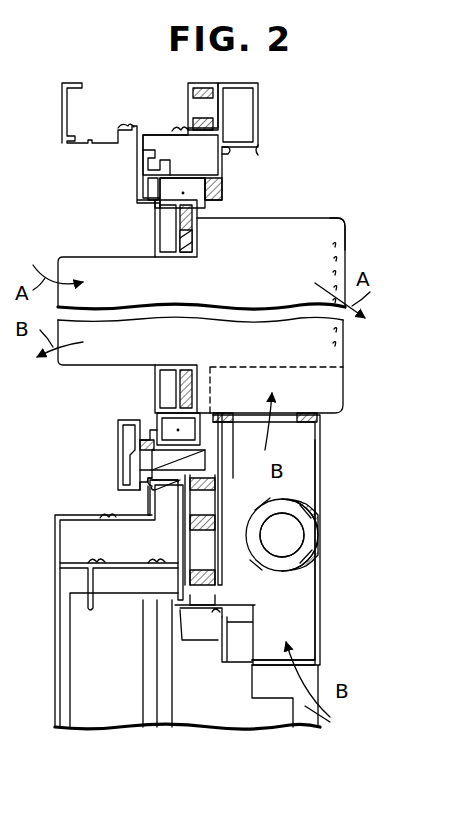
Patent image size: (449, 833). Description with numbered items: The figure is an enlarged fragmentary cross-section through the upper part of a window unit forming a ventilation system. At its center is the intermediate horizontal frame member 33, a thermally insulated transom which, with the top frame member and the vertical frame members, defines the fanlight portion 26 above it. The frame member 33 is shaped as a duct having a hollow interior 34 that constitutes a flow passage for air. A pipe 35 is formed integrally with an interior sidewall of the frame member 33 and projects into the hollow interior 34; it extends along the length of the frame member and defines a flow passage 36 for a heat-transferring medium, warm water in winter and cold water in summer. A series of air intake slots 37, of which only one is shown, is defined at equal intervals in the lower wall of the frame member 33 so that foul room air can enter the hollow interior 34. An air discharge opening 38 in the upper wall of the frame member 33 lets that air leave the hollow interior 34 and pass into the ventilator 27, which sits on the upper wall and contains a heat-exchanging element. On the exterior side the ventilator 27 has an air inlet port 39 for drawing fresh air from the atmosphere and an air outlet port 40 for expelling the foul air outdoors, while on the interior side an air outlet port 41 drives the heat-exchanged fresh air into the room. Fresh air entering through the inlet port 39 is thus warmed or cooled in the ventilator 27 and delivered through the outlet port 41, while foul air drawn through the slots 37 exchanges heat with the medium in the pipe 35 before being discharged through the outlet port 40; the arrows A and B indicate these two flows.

The fanlight portion 26 is at (262, 210).
The ventilator 27 is at (326, 216).
The air outlet port 41 is at (340, 275).
The air inlet port 39 is at (57, 275).
The air outlet port 40 is at (57, 348).
The air discharge opening 38 is at (288, 418).
The intermediate horizontal frame member 33 is at (330, 467).
The flow passage 36 is at (285, 532).
The hollow interior 34 is at (297, 587).
The pipe 35 is at (263, 558).
The air intake slots 37 is at (300, 663).